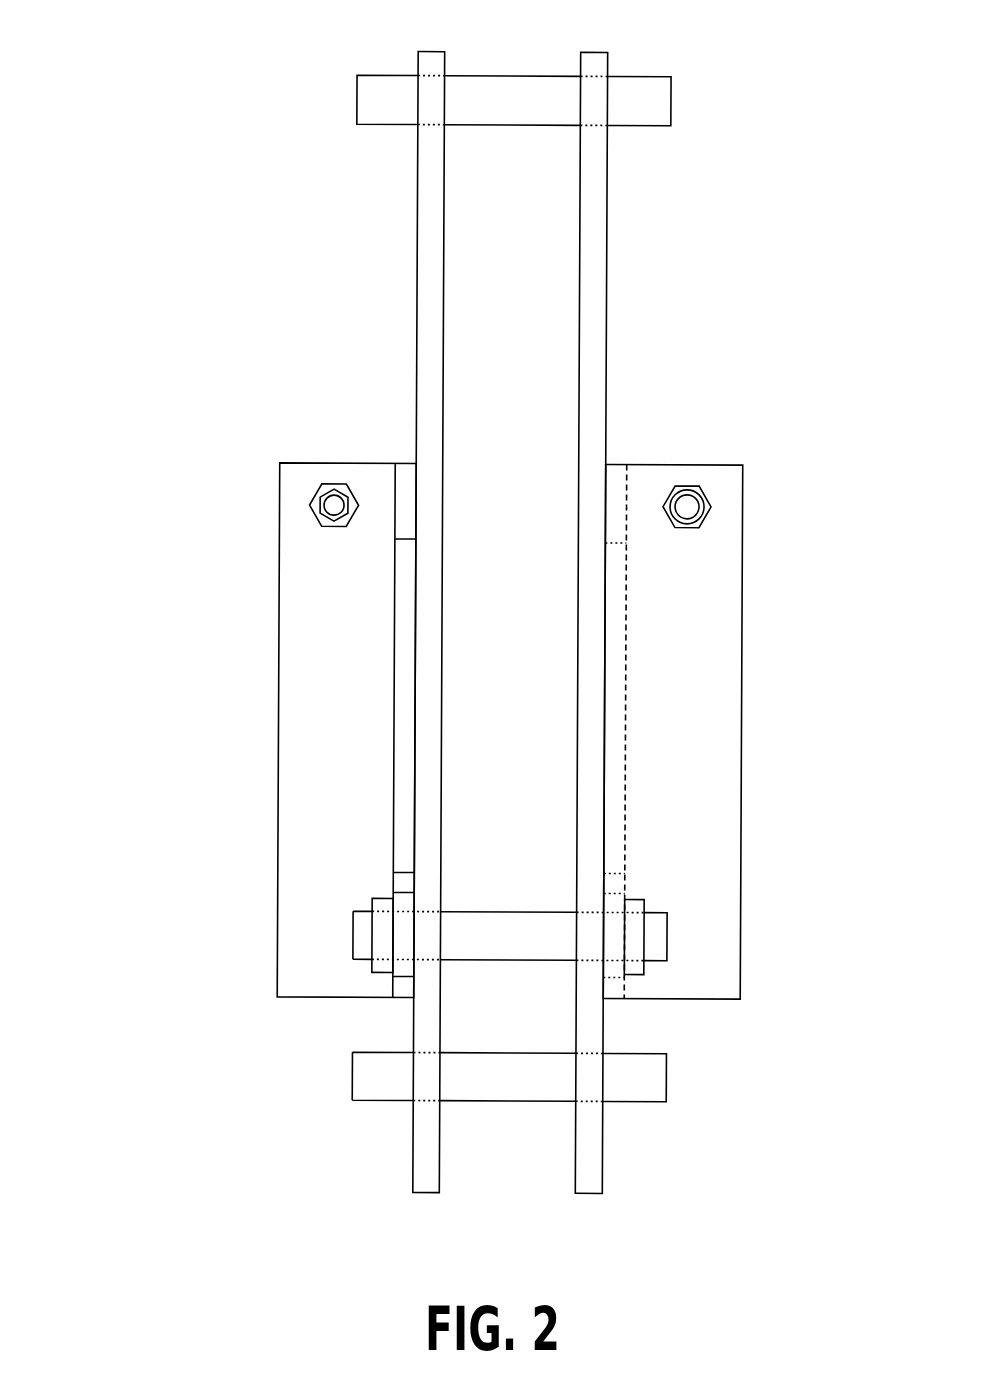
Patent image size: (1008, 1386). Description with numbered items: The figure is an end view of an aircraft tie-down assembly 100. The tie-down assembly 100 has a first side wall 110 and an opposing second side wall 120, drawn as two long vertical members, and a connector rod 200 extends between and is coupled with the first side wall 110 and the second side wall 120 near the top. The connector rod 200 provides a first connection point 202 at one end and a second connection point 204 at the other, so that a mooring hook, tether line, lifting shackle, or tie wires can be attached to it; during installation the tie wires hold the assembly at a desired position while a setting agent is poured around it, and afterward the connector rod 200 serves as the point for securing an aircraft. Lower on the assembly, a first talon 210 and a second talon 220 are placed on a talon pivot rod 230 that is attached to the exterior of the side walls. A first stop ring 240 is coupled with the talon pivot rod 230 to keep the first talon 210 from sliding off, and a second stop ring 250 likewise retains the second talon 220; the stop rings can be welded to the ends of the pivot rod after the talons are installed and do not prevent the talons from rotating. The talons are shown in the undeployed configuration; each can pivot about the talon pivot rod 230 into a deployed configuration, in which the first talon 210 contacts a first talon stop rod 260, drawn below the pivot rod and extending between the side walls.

The tie-down assembly 100 is at (163, 119).
The first side wall 110 is at (415, 223).
The second side wall 120 is at (607, 218).
The connector rod 200 is at (530, 75).
The first connection point 202 is at (369, 76).
The second connection point 204 is at (661, 75).
The first talon 210 is at (279, 720).
The second talon 220 is at (742, 635).
The talon pivot rod 230 is at (535, 952).
The first stop ring 240 is at (373, 899).
The second stop ring 250 is at (646, 899).
The first talon stop rod 260 is at (373, 1101).